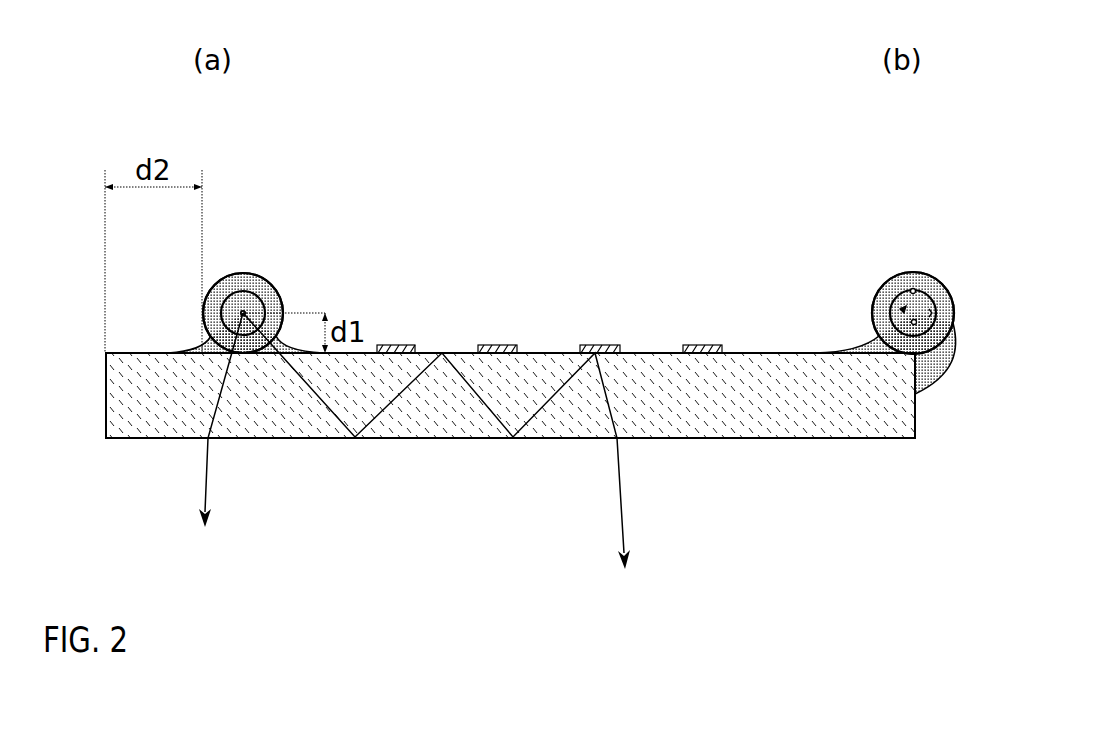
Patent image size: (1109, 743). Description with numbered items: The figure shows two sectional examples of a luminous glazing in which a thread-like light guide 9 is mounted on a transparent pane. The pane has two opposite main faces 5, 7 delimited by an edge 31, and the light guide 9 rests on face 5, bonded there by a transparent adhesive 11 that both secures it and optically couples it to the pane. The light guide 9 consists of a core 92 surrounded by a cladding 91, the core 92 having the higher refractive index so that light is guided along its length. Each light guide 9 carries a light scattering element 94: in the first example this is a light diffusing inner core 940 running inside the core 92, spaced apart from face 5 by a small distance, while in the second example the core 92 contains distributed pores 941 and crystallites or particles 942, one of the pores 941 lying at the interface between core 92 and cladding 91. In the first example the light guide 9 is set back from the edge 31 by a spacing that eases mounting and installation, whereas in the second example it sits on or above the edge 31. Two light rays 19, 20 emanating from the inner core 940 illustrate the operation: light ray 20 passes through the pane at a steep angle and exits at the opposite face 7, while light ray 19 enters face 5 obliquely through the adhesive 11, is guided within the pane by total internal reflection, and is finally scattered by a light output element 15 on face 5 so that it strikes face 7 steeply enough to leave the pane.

The face 5 is at (633, 353).
The face 7 is at (740, 439).
The edge 31 is at (917, 410).
The light output elements 15 is at (397, 345).
The adhesive 11 is at (180, 343).
The light guide 9 is at (288, 276).
The core 92 is at (263, 302).
The cladding 91 is at (253, 282).
The light scattering element 94 is at (242, 308).
The inner core 940 is at (243, 313).
The pores 941 is at (912, 289).
The crystallites or particles 942 is at (890, 290).
The light ray 20 is at (205, 487).
The light ray 19 is at (620, 517).